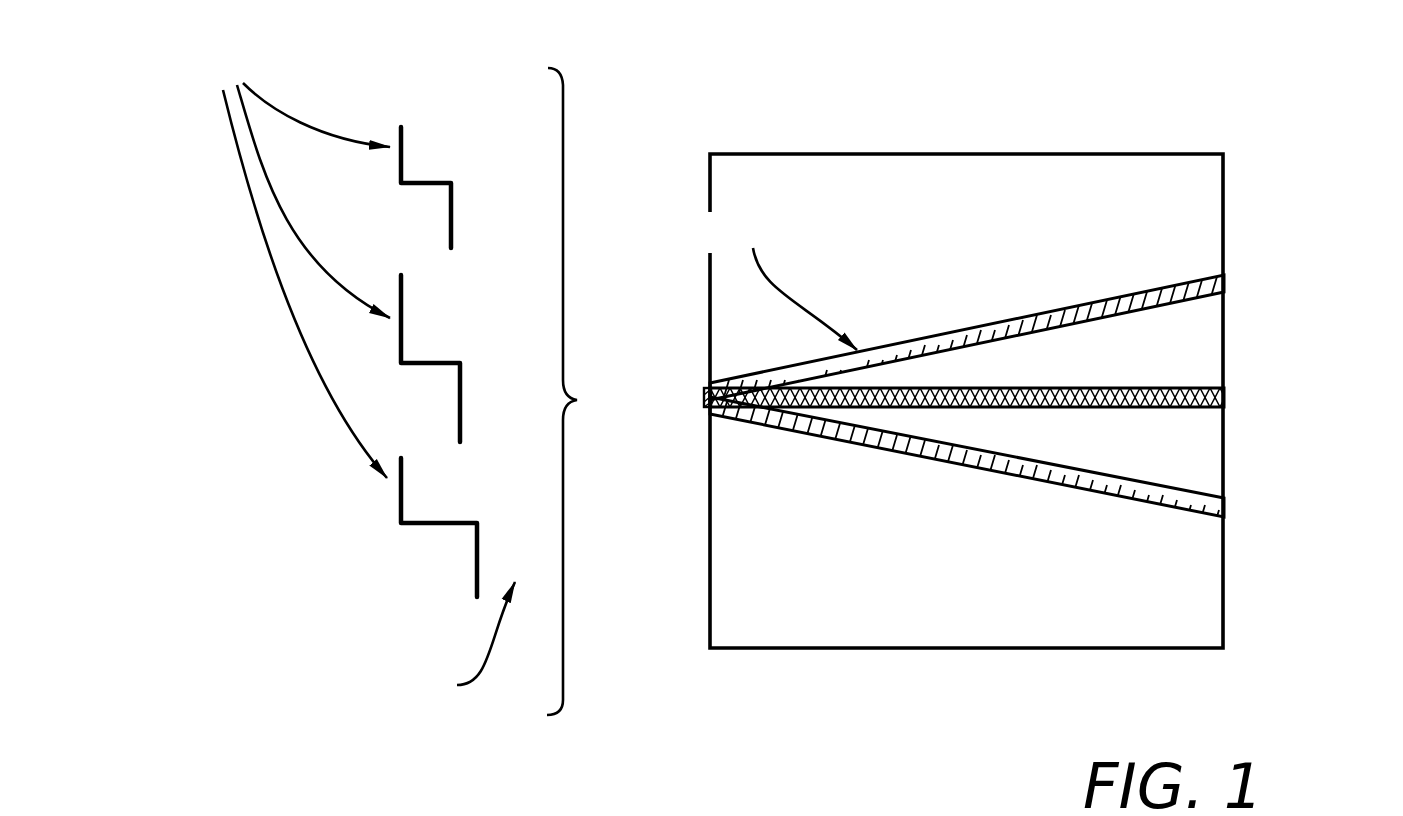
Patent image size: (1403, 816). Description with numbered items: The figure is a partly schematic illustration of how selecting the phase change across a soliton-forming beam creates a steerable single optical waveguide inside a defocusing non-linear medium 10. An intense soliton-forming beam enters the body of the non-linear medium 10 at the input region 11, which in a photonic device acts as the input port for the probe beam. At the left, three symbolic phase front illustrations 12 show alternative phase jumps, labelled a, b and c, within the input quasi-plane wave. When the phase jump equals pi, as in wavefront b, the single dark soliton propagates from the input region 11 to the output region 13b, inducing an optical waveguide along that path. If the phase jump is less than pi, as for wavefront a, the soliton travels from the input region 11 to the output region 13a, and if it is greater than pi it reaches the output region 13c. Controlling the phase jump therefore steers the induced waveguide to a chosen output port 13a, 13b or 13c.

The non-linear medium 10 is at (1148, 632).
The input region 11 is at (706, 396).
The phase front illustrations 12 is at (348, 357).
The output region 13a is at (1226, 289).
The output region 13b is at (1226, 397).
The output region 13c is at (1226, 508).